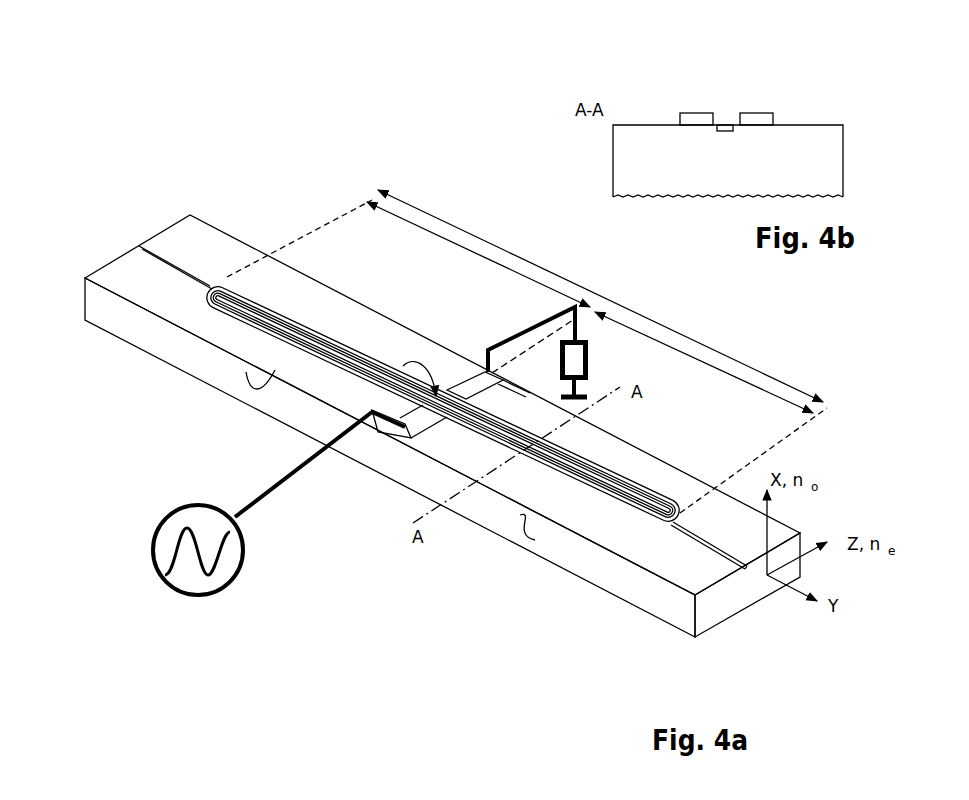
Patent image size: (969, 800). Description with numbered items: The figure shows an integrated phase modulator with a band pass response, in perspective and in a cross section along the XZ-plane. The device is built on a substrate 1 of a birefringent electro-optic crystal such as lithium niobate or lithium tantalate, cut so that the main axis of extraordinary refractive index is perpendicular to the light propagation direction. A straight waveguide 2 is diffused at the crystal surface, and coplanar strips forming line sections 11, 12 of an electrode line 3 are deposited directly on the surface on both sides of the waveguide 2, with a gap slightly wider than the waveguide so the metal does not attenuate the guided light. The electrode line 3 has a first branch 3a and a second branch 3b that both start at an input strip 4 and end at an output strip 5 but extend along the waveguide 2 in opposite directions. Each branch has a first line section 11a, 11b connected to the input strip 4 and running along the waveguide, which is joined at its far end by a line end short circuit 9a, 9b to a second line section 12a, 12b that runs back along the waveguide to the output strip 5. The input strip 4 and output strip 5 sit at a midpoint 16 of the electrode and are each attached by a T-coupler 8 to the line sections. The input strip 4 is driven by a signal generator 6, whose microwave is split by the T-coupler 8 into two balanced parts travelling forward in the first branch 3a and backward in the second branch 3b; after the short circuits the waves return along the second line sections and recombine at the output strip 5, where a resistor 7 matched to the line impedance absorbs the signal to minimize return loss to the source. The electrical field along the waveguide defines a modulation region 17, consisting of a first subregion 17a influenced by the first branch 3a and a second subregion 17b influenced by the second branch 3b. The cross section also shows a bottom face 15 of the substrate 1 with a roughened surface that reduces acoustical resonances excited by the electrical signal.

In FIG. 4A, the substrate 1 is at (195, 224).
In FIG. 4B, the substrate 1 is at (613, 158).
In FIG. 4A, the optical waveguide 2 is at (205, 280).
In FIG. 4B, the optical waveguide 2 is at (726, 131).
In FIG. 4A, the electrode line 3 is at (413, 285).
In FIG. 4B, the electrode line 3 is at (671, 99).
In FIG. 4A, the first branch 3a is at (272, 363).
In FIG. 4A, the second branch 3b is at (548, 508).
In FIG. 4A, the input strip 4 is at (418, 410).
In FIG. 4A, the output strip 5 is at (478, 377).
In FIG. 4A, the signal generator 6 is at (213, 582).
In FIG. 4A, the resistor 7 is at (590, 357).
In FIG. 4A, the T-coupler 8 is at (455, 392).
In FIG. 4A, the line end short circuit 9a is at (204, 281).
In FIG. 4A, the line end short circuit 9b is at (665, 527).
In FIG. 4A, the first line section 11 is at (270, 325).
In FIG. 4B, the first line section 11 is at (696, 112).
In FIG. 4A, the first line section 11a is at (335, 362).
In FIG. 4A, the first line section 11b is at (613, 513).
In FIG. 4A, the second line section 12 is at (307, 312).
In FIG. 4B, the second line section 12 is at (756, 112).
In FIG. 4A, the second line section 12a is at (332, 335).
In FIG. 4A, the second line section 12b is at (560, 450).
In FIG. 4A, the bottom face 15 is at (688, 650).
In FIG. 4B, the bottom face 15 is at (733, 198).
In FIG. 4A, the midpoint 16 is at (385, 390).
In FIG. 4A, the modulation region 17 is at (527, 351).
In FIG. 4A, the first subregion 17a is at (478, 254).
In FIG. 4A, the second subregion 17b is at (704, 362).